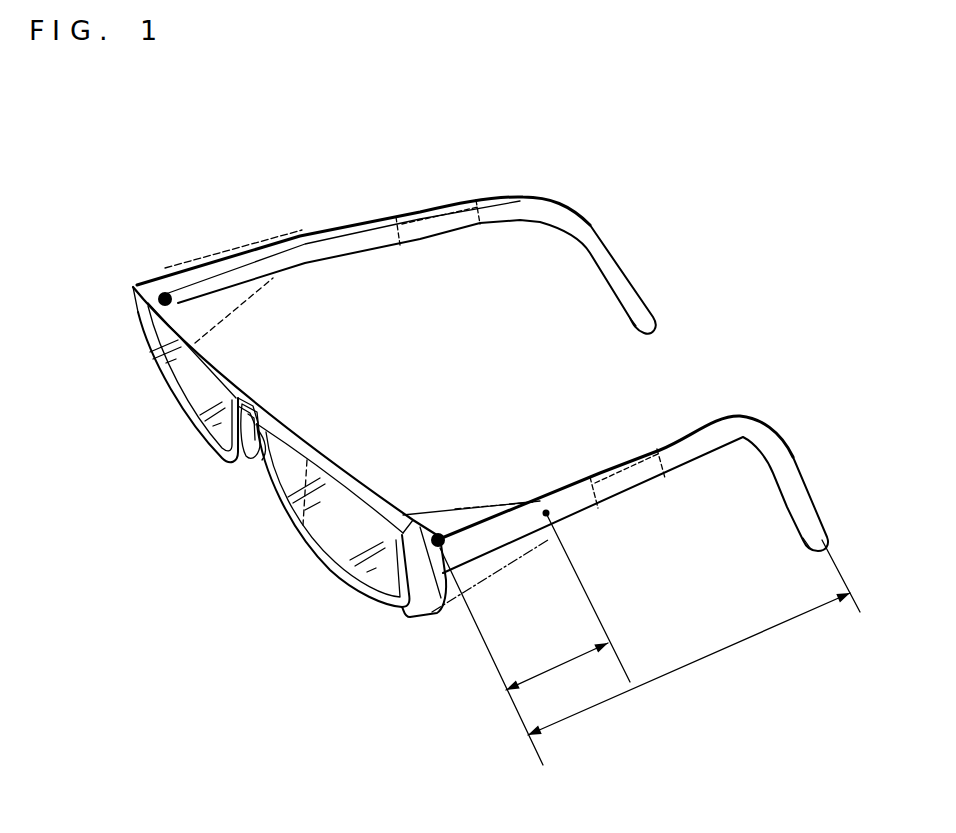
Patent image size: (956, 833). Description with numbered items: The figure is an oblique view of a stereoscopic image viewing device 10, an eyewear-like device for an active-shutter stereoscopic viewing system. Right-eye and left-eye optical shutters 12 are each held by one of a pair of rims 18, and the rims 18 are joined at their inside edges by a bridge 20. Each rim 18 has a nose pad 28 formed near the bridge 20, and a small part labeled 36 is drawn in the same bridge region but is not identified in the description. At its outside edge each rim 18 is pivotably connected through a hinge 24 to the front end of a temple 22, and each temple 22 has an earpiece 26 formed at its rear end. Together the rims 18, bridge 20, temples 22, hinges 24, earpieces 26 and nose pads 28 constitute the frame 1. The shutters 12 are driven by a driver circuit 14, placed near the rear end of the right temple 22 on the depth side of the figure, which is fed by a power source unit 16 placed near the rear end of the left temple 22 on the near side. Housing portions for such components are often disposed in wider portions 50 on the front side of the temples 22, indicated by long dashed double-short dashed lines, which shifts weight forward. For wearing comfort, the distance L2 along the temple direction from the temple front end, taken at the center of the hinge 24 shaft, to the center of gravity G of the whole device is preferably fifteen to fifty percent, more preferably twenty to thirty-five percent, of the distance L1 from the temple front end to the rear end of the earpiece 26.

The frame 1 is at (497, 159).
The stereoscopic image viewing device 10 is at (647, 213).
The optical shutters 12 is at (183, 387).
The driver circuit 14 is at (418, 227).
The power source unit 16 is at (608, 487).
The rims 18 is at (200, 338).
The bridge 20 is at (247, 395).
The temple 22 is at (303, 236).
The hinge 24 is at (164, 294).
The earpiece 26 is at (640, 312).
The nose pad 28 is at (327, 450).
The nose pad 36 is at (247, 462).
The wider portions 50 is at (217, 260).
The center of gravity G is at (546, 513).
The distance between front end of temple and rear end of earpiece L1 is at (650, 652).
The distance between front end of temple and center of gravity L2 is at (568, 610).